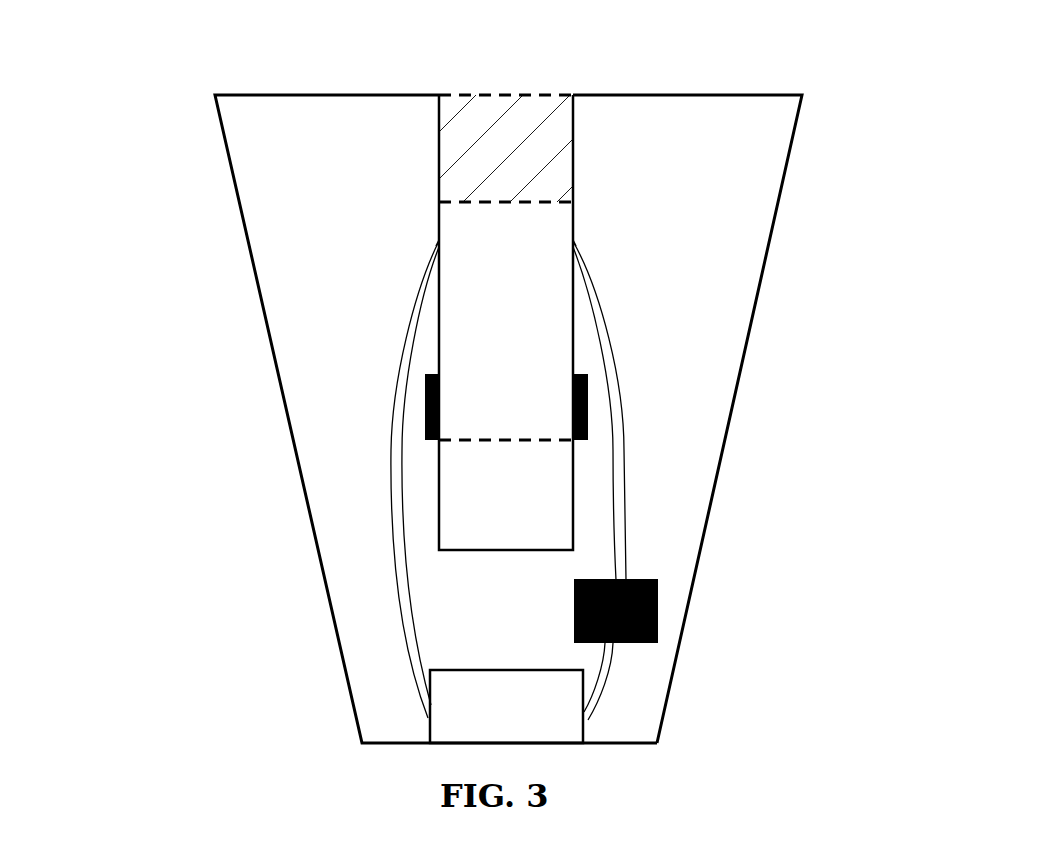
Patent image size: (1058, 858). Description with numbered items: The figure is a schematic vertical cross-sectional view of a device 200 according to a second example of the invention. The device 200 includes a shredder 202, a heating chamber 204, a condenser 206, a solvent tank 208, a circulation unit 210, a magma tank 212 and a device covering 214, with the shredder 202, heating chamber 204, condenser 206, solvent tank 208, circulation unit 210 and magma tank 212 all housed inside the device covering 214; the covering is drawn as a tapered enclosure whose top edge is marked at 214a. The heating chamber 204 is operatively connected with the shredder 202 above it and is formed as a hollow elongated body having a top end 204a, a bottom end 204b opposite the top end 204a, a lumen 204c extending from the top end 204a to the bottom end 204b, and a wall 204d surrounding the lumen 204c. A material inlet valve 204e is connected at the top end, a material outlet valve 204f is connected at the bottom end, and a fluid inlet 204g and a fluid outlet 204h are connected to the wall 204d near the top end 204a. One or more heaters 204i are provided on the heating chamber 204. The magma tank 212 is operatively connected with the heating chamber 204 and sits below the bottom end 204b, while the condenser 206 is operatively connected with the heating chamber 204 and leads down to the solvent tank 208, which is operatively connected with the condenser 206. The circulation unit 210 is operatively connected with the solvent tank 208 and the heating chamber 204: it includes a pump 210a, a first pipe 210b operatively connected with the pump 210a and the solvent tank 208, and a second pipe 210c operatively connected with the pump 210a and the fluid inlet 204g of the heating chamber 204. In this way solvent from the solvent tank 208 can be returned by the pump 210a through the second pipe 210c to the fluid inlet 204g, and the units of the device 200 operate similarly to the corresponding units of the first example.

The device 200 is at (190, 152).
The shredder 202 is at (506, 148).
The heating chamber 204 is at (506, 448).
The top end 204a is at (430, 203).
The bottom end 204b is at (422, 441).
The lumen 204c is at (519, 308).
The wall 204d is at (566, 329).
The material inlet valve 204e is at (477, 220).
The material outlet valve 204f is at (530, 457).
The fluid inlet 204g is at (580, 234).
The fluid outlet 204h is at (436, 246).
The heater 204i is at (460, 404).
The condenser 206 is at (392, 604).
The solvent tank 208 is at (506, 706).
The circulation unit 210 is at (632, 570).
The pump 210a is at (616, 611).
The first pipe 210b is at (608, 687).
The second pipe 210c is at (630, 523).
The magma tank 212 is at (506, 495).
The device covering 214 is at (756, 322).
The housing top opening 214a is at (565, 86).